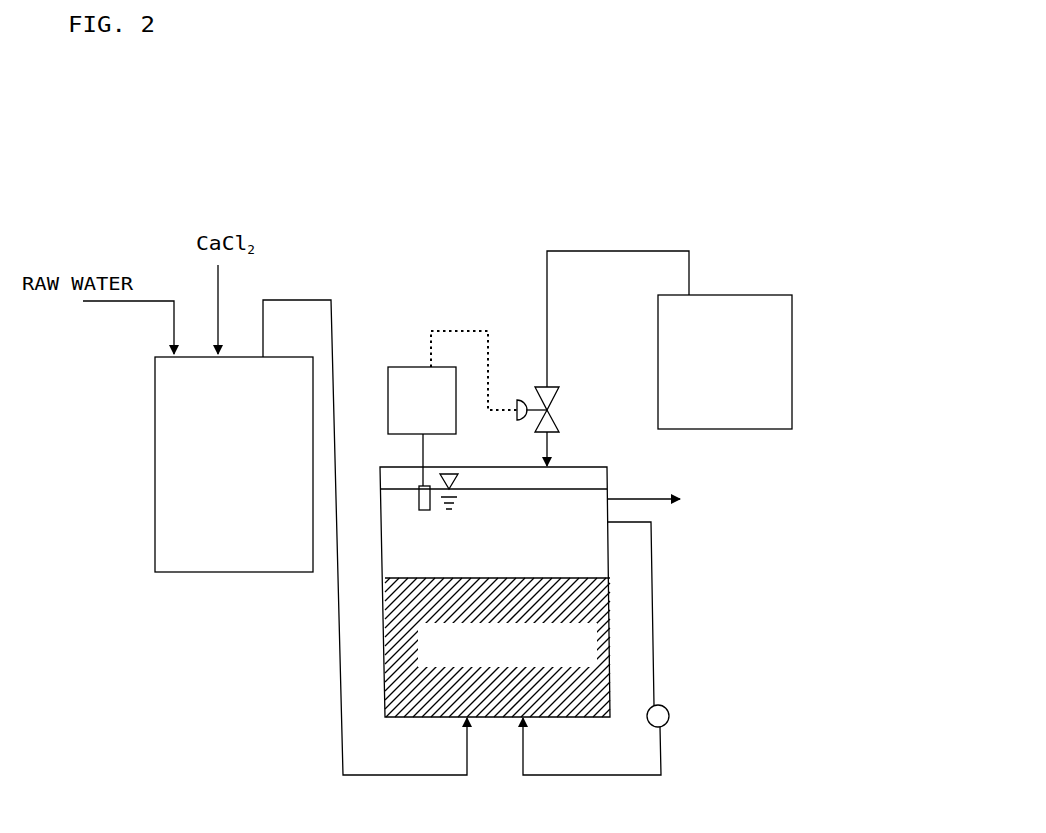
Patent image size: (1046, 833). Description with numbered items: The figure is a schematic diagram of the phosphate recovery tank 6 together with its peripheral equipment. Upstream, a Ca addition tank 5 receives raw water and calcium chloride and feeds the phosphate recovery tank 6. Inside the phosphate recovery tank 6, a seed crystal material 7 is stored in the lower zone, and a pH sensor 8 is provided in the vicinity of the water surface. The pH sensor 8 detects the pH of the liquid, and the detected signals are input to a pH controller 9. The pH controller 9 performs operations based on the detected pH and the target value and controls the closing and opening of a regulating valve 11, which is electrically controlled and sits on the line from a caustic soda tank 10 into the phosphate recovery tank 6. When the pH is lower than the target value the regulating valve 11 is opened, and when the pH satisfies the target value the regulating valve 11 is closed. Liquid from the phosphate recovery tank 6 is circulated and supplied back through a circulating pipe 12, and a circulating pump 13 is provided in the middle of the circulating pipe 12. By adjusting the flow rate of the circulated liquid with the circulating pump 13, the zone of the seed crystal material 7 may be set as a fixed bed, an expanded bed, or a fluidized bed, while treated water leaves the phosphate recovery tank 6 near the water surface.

The Ca addition tank 5 is at (155, 438).
The phosphate recovery tank 6 is at (607, 558).
The seed crystal material 7 is at (601, 641).
The pH sensor 8 is at (417, 508).
The pH controller 9 is at (422, 378).
The NaOH (caustic soda) tank 10 is at (792, 312).
The regulating valve 11 is at (559, 415).
The circulating pipe 12 is at (654, 593).
The circulating pump 13 is at (670, 706).